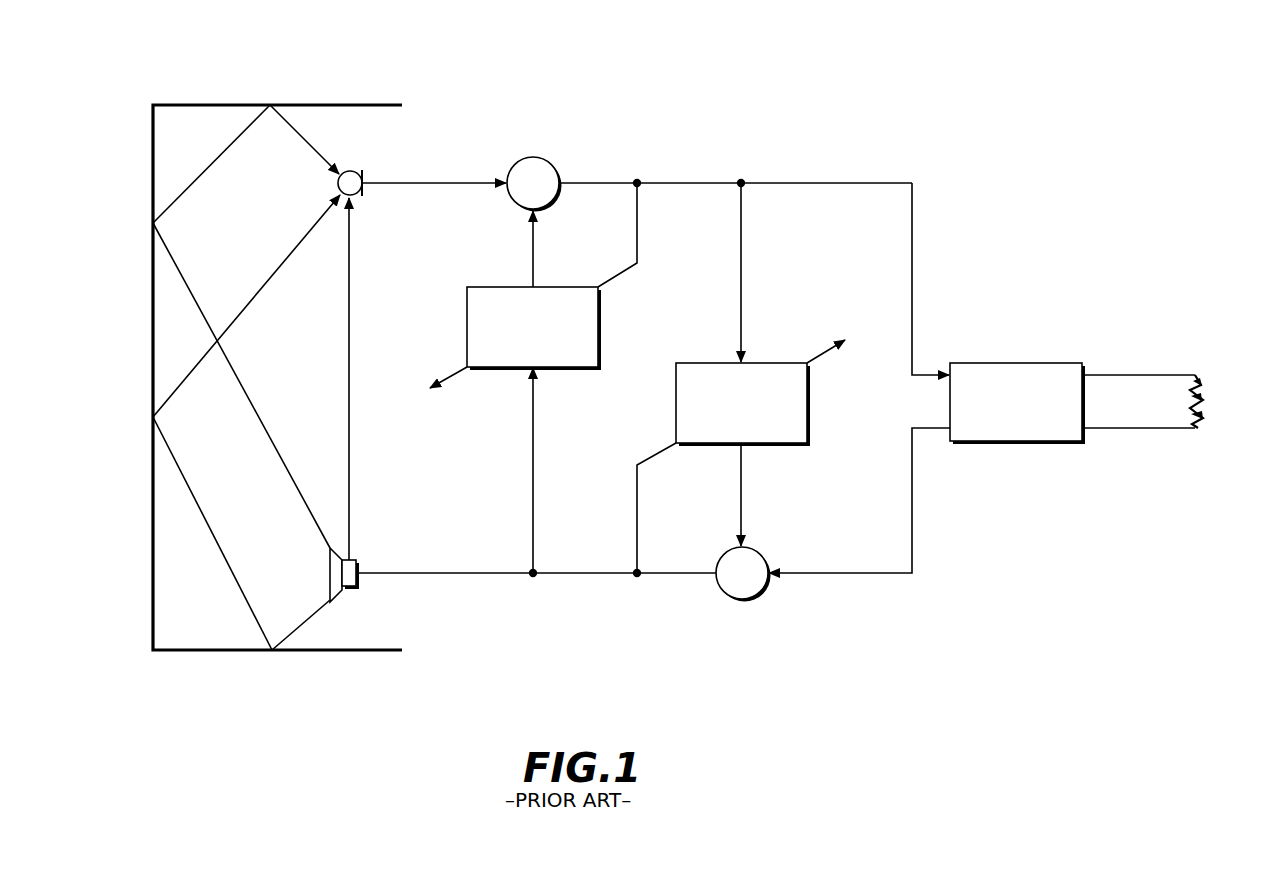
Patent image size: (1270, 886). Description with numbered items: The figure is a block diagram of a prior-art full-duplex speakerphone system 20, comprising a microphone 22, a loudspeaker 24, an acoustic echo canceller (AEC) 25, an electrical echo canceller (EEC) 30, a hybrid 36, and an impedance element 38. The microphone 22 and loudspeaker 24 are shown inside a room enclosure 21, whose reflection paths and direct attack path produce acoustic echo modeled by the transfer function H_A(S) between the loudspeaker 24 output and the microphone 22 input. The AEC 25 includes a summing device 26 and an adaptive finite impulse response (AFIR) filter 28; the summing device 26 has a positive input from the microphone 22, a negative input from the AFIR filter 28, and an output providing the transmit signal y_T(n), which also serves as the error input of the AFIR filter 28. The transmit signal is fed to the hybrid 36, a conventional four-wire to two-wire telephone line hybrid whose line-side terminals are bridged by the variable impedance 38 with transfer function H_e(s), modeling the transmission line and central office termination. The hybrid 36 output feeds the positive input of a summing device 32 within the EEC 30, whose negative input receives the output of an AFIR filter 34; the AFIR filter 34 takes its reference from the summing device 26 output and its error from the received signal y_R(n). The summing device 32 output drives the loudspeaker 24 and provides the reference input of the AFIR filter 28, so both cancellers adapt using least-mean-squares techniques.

The speakerphone system 20 is at (429, 714).
The room enclosure 21 is at (197, 104).
The microphone 22 is at (365, 176).
The loudspeaker 24 is at (352, 590).
The acoustic echo canceller (AEC) 25 is at (560, 150).
The summing device 26 is at (552, 207).
The adaptive finite impulse response (AFIR) filter 28 is at (497, 287).
The electrical echo canceller (EEC) 30 is at (735, 607).
The summing device 32 is at (762, 592).
The AFIR filter 34 is at (706, 363).
The hybrid 36 is at (1037, 363).
The impedance element 38 is at (1205, 392).